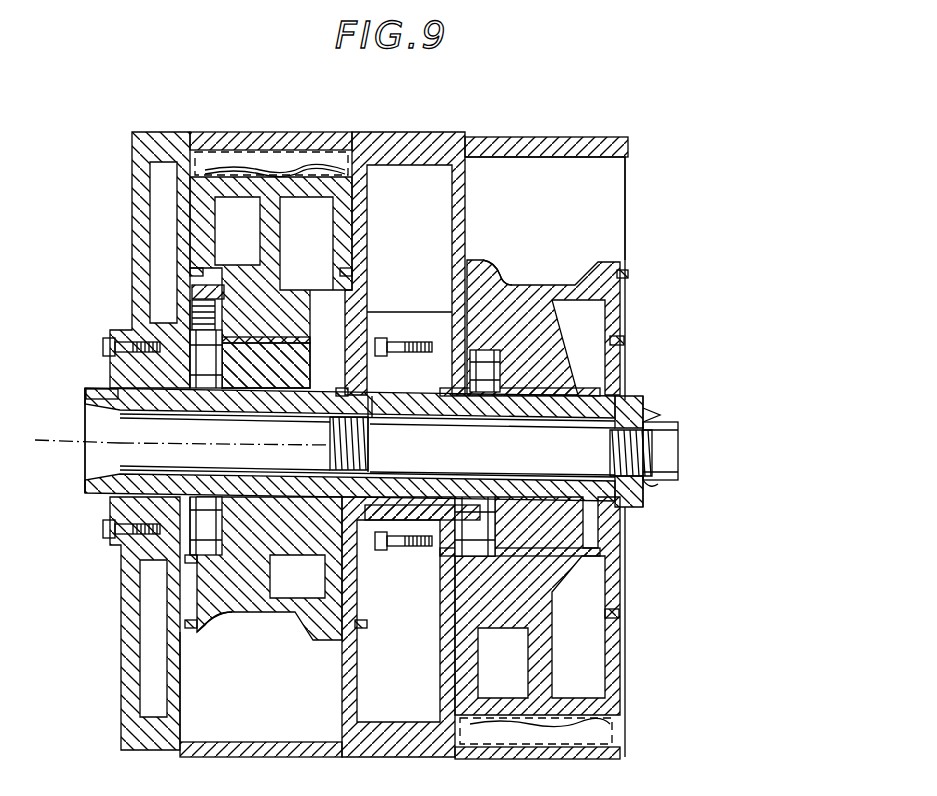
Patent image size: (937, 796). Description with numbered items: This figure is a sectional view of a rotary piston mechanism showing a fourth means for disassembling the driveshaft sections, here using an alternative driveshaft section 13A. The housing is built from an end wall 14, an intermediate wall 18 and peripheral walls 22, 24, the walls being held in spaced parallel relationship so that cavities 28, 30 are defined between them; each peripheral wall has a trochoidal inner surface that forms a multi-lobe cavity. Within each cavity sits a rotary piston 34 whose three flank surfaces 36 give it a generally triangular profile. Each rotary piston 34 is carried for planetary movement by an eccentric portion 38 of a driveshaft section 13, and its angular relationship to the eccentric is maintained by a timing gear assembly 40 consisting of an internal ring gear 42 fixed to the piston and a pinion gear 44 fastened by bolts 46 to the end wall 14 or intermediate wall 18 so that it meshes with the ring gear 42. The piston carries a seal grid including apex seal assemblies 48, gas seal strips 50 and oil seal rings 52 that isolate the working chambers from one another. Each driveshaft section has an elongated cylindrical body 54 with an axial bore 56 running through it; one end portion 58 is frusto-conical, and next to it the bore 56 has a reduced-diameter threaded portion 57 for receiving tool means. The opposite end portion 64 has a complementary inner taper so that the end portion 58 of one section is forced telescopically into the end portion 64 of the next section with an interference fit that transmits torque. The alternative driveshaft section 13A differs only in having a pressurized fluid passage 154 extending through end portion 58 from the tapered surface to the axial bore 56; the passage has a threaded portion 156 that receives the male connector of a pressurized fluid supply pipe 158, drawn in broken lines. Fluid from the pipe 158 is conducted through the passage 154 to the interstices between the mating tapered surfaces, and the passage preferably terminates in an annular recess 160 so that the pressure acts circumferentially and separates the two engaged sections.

The driveshaft section 13 is at (180, 335).
The alternative driveshaft section 13A is at (85, 412).
The end wall 14 is at (178, 131).
The intermediate wall 18 is at (428, 131).
The peripheral wall 22 is at (292, 131).
The peripheral wall 24 is at (545, 136).
The cavity 28 is at (252, 702).
The cavity 30 is at (560, 197).
The rotary piston 34 is at (550, 280).
The flank surface 36 is at (487, 275).
The eccentric portion 38 is at (282, 345).
The timing gear assembly 40 is at (205, 340).
The internal ring gear 42 is at (195, 300).
The pinion gear 44 is at (505, 380).
The bolt 46 is at (100, 345).
The apex seal assembly 48 is at (315, 158).
The gas seal strip 50 is at (628, 273).
The oil seal ring 52 is at (352, 272).
The cylindrical body 54 is at (452, 300).
The axial bore 56 is at (258, 466).
The threaded portion 57 is at (362, 430).
The end portion 58 is at (378, 462).
The end portion 64 is at (86, 391).
The pressurized fluid passage 154 is at (348, 390).
The threaded portion 156 is at (330, 425).
The pressurized fluid supply pipe 158 is at (38, 452).
The annular recess 160 is at (660, 488).